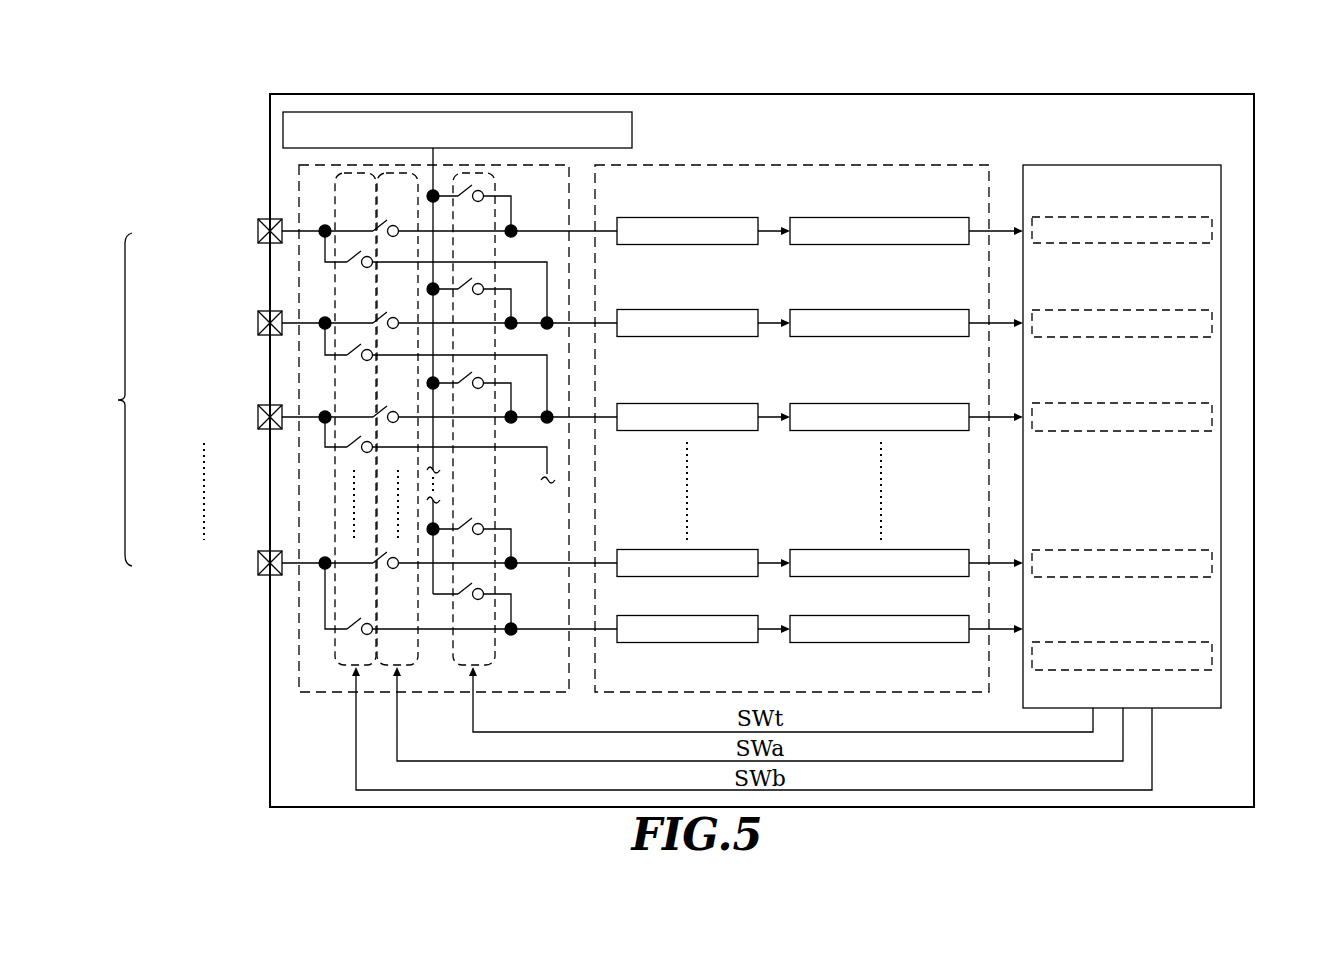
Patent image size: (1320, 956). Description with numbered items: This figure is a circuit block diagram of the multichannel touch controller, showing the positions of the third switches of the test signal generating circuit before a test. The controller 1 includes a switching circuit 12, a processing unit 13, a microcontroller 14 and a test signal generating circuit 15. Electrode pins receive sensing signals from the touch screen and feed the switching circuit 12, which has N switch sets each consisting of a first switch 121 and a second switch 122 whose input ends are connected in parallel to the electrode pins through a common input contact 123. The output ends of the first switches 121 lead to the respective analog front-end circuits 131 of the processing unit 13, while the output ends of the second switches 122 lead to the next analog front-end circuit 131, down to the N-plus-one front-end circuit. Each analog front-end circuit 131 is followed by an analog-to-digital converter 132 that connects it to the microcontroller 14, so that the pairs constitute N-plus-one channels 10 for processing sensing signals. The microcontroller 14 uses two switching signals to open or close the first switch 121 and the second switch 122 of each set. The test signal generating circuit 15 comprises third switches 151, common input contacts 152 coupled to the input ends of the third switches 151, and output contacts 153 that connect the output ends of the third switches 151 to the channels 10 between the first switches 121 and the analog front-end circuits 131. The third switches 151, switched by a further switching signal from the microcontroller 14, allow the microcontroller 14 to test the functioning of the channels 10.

The controller 1 is at (1236, 94).
The channels 10 is at (183, 397).
The switching circuit 12 is at (325, 693).
The first switch 121 is at (380, 578).
The second switch 122 is at (355, 641).
The common input contact 123 is at (322, 569).
The processing unit 13 is at (687, 165).
The analog front-end circuit 131 is at (748, 223).
The analog-to-digital converter 132 is at (812, 225).
The microcontroller 14 is at (1207, 190).
The test signal generating circuit 15 is at (291, 128).
The third switch 151 is at (495, 190).
The common input contact 152 is at (430, 197).
The output contact 153 is at (519, 230).